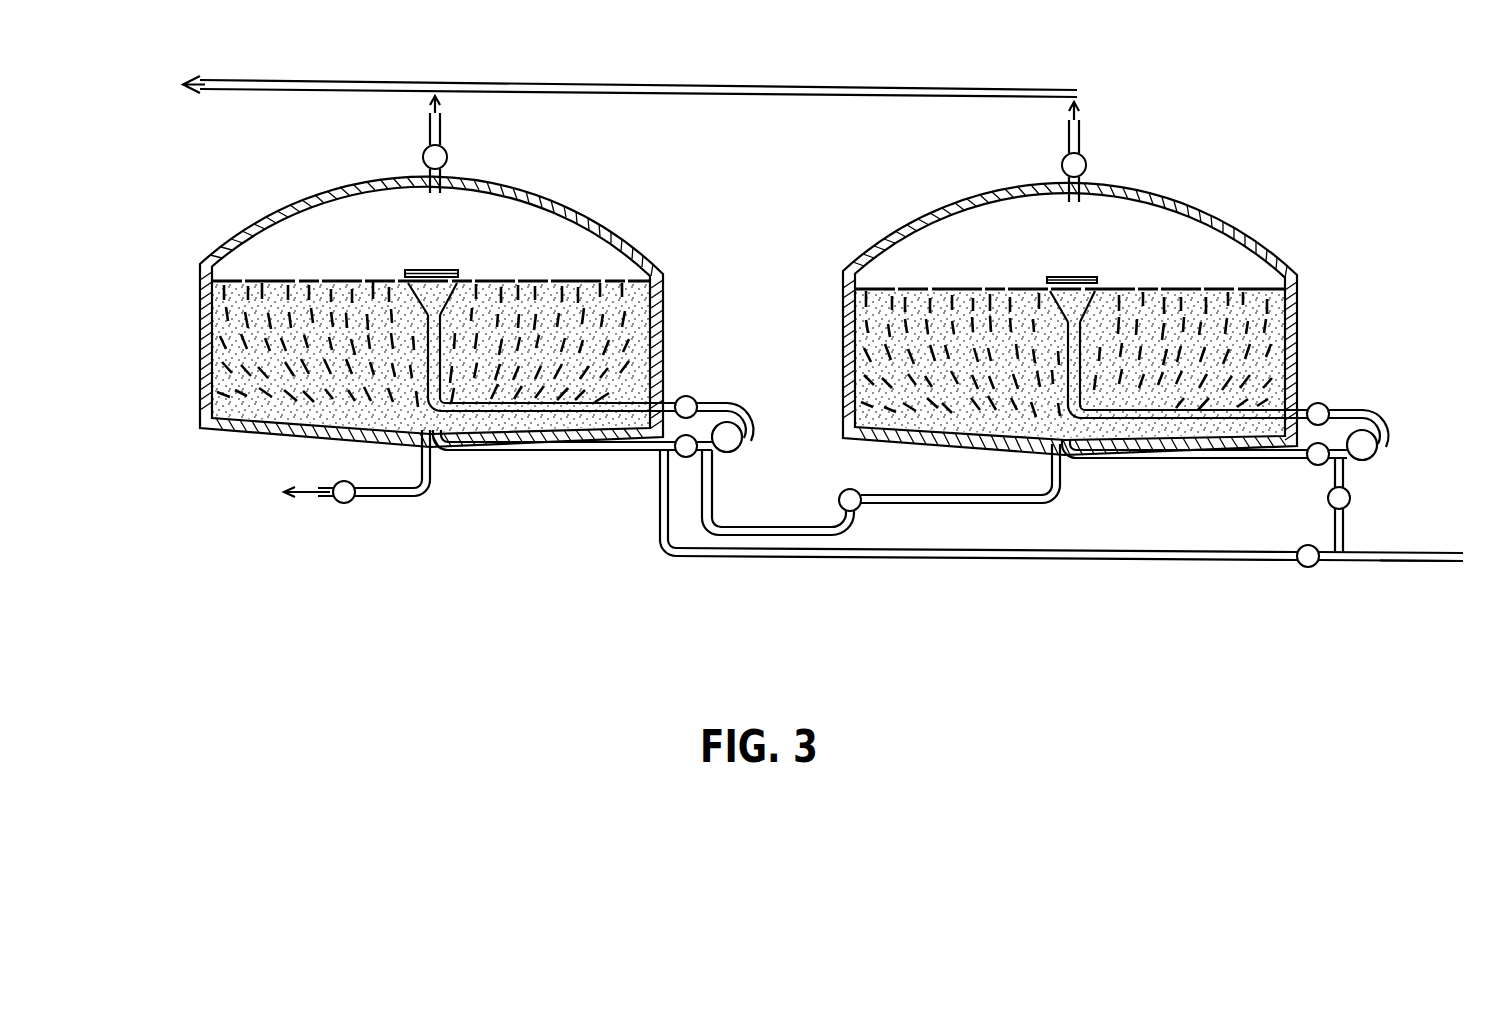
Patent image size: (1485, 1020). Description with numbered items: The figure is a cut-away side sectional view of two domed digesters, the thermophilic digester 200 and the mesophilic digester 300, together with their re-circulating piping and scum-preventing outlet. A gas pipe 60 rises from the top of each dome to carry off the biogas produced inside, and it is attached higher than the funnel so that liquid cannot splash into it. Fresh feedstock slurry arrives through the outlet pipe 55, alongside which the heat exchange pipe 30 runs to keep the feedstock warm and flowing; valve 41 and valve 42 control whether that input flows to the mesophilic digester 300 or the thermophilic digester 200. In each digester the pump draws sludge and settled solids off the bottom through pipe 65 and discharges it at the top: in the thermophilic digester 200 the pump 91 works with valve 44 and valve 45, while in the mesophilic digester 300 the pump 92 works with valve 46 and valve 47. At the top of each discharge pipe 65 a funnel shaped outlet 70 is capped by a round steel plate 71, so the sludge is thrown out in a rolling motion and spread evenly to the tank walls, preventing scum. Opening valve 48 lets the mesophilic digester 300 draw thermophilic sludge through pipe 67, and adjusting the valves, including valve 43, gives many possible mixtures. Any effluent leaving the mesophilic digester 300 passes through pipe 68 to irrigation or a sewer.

The gas pipe 60 is at (610, 80).
The mesophilic digester 300 is at (583, 204).
The thermophilic digester 200 is at (1253, 231).
The round steel plate 71 is at (434, 268).
The funnel shaped outlet 70 is at (421, 303).
The pipe 65 is at (441, 342).
The valve 47 is at (686, 396).
The valve 46 is at (686, 458).
The pump 92 is at (741, 445).
The pipe 67 is at (948, 505).
The valve 48 is at (850, 489).
The pipe 68 is at (365, 498).
The valve 43 is at (344, 481).
The heat exchange pipe 30 is at (1422, 552).
The outlet pipe 55 is at (1425, 566).
The valve 41 is at (1305, 569).
The pump 91 is at (1375, 456).
The valve 44 is at (1336, 386).
The valve 45 is at (1309, 465).
The valve 42 is at (1350, 498).